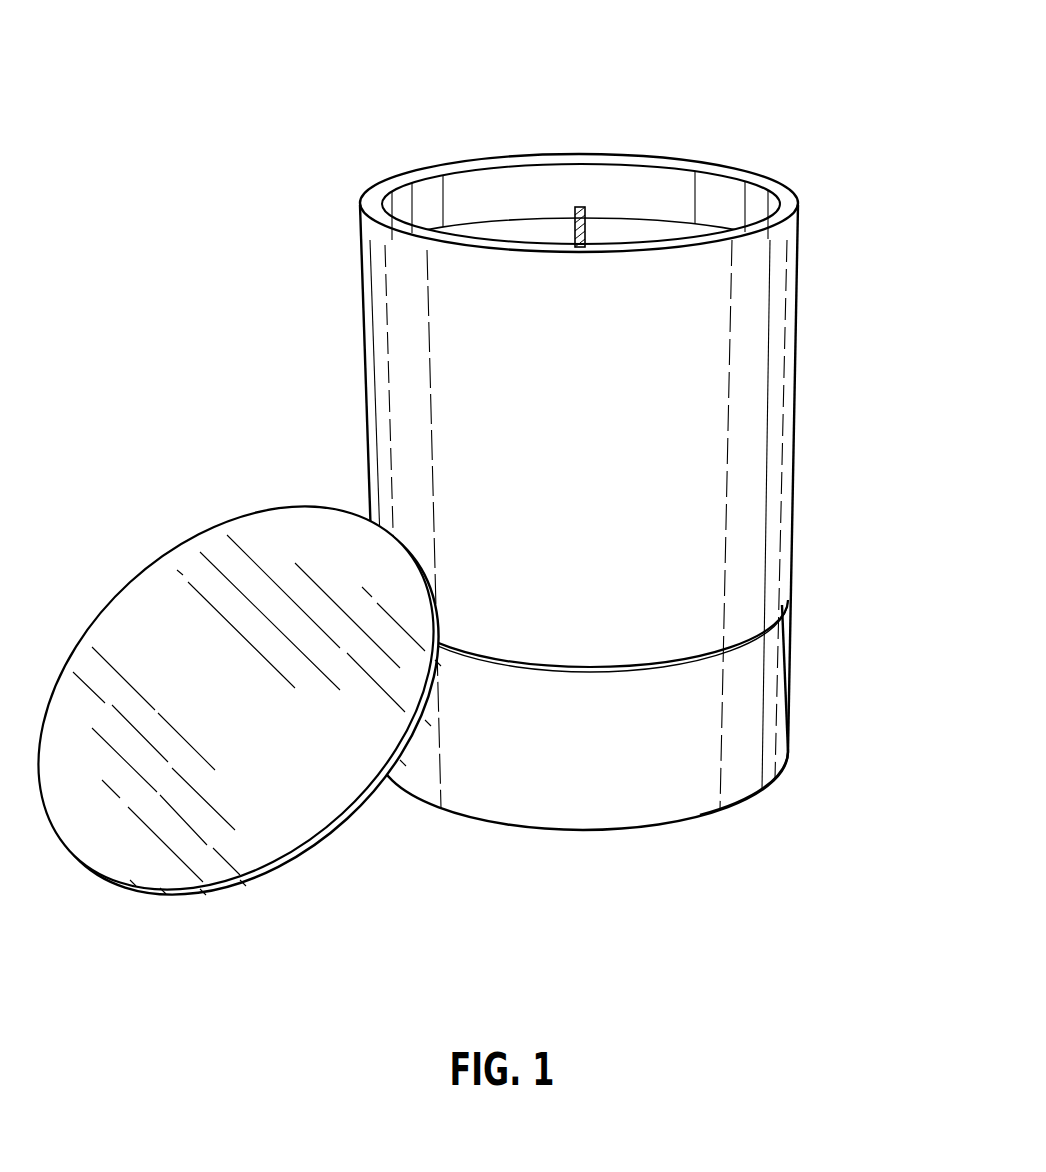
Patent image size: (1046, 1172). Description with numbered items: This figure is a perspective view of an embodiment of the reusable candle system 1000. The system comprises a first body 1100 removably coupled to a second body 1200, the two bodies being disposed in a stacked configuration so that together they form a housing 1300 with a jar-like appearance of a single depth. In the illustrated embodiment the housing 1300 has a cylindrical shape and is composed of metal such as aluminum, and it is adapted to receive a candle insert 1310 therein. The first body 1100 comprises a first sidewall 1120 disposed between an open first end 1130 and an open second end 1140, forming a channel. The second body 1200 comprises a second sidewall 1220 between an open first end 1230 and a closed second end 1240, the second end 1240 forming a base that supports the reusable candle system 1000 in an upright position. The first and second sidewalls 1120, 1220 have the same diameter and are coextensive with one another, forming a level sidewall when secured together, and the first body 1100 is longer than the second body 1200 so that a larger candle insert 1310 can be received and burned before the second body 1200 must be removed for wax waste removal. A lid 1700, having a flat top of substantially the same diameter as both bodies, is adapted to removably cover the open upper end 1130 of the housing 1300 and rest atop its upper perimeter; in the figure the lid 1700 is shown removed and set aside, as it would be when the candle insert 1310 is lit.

The reusable candle system 1000 is at (822, 99).
The first body 1100 is at (793, 412).
The first sidewall 1120 is at (362, 278).
The first end 1130 is at (783, 208).
The second end 1140 is at (788, 600).
The second body 1200 is at (788, 735).
The second sidewall 1220 is at (537, 773).
The first end 1230 is at (763, 632).
The second end 1240 is at (767, 783).
The housing 1300 is at (385, 473).
The candle insert 1310 is at (642, 232).
The lid 1700 is at (278, 822).